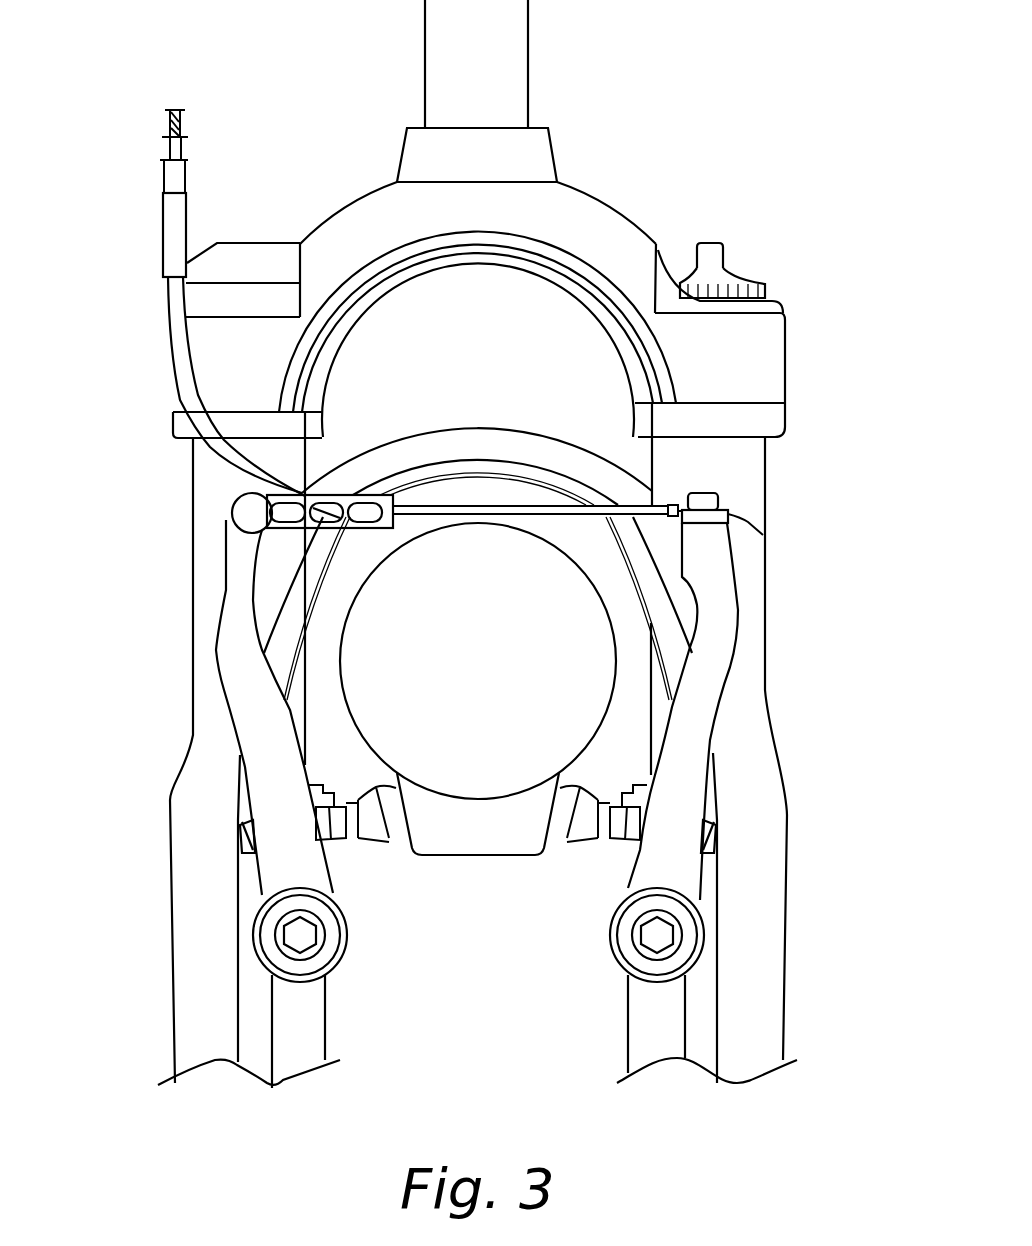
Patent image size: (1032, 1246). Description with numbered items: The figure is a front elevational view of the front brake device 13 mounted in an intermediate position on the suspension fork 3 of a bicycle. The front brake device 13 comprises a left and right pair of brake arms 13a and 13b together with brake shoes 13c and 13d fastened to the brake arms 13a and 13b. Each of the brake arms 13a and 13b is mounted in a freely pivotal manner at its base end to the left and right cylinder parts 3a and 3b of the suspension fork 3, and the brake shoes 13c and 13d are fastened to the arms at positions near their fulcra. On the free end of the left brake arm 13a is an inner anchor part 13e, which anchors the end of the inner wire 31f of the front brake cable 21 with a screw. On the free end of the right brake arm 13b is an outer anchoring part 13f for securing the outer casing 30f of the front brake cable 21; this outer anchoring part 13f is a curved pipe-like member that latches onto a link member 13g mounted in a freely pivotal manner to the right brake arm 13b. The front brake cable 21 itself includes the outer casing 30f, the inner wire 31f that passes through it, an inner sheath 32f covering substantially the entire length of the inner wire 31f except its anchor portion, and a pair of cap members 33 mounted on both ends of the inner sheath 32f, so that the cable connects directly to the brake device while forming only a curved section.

The suspension fork 3 is at (774, 471).
The left cylinder part 3a is at (760, 587).
The right cylinder part 3b is at (205, 565).
The front brake device 13 is at (605, 967).
The left brake arm 13a is at (713, 683).
The right brake arm 13b is at (237, 660).
The brake shoe 13c is at (370, 838).
The brake shoe 13d is at (580, 840).
The inner anchor part 13e is at (713, 495).
The outer anchoring part 13f is at (213, 447).
The link member 13g is at (363, 528).
The front brake cable 21 is at (145, 176).
The outer casing 30f is at (163, 192).
The inner wire 31f is at (755, 518).
The inner sheath 32f is at (593, 504).
The cap member 33 is at (673, 503).